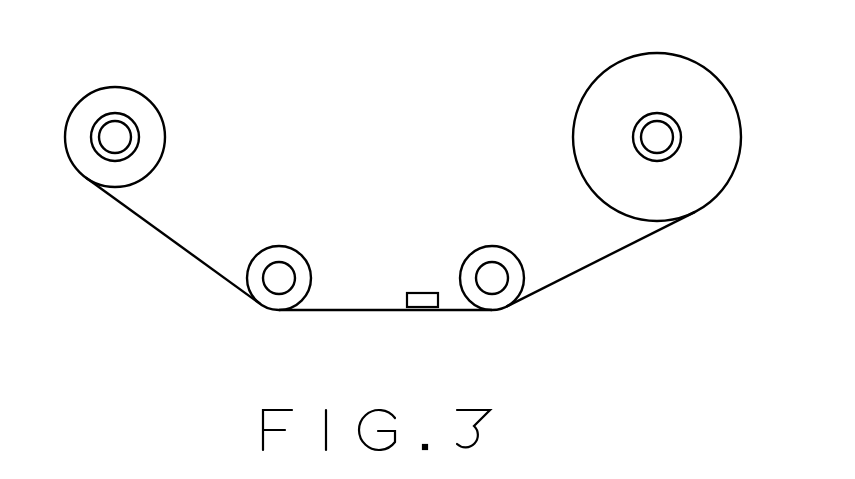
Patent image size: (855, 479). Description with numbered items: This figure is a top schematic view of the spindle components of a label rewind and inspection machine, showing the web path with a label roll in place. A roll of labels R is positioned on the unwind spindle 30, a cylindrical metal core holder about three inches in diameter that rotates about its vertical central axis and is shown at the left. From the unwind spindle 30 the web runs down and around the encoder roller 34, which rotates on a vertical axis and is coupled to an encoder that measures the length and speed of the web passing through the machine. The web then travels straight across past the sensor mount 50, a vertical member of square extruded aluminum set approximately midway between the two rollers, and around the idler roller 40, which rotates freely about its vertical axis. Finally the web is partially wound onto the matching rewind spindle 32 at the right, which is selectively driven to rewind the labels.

The roll of labels R is at (106, 72).
The unwind spindle 30 is at (118, 133).
The rewind spindle 32 is at (675, 118).
The encoder roller 34 is at (283, 255).
The idler roller 40 is at (492, 245).
The sensor mount 50 is at (428, 300).